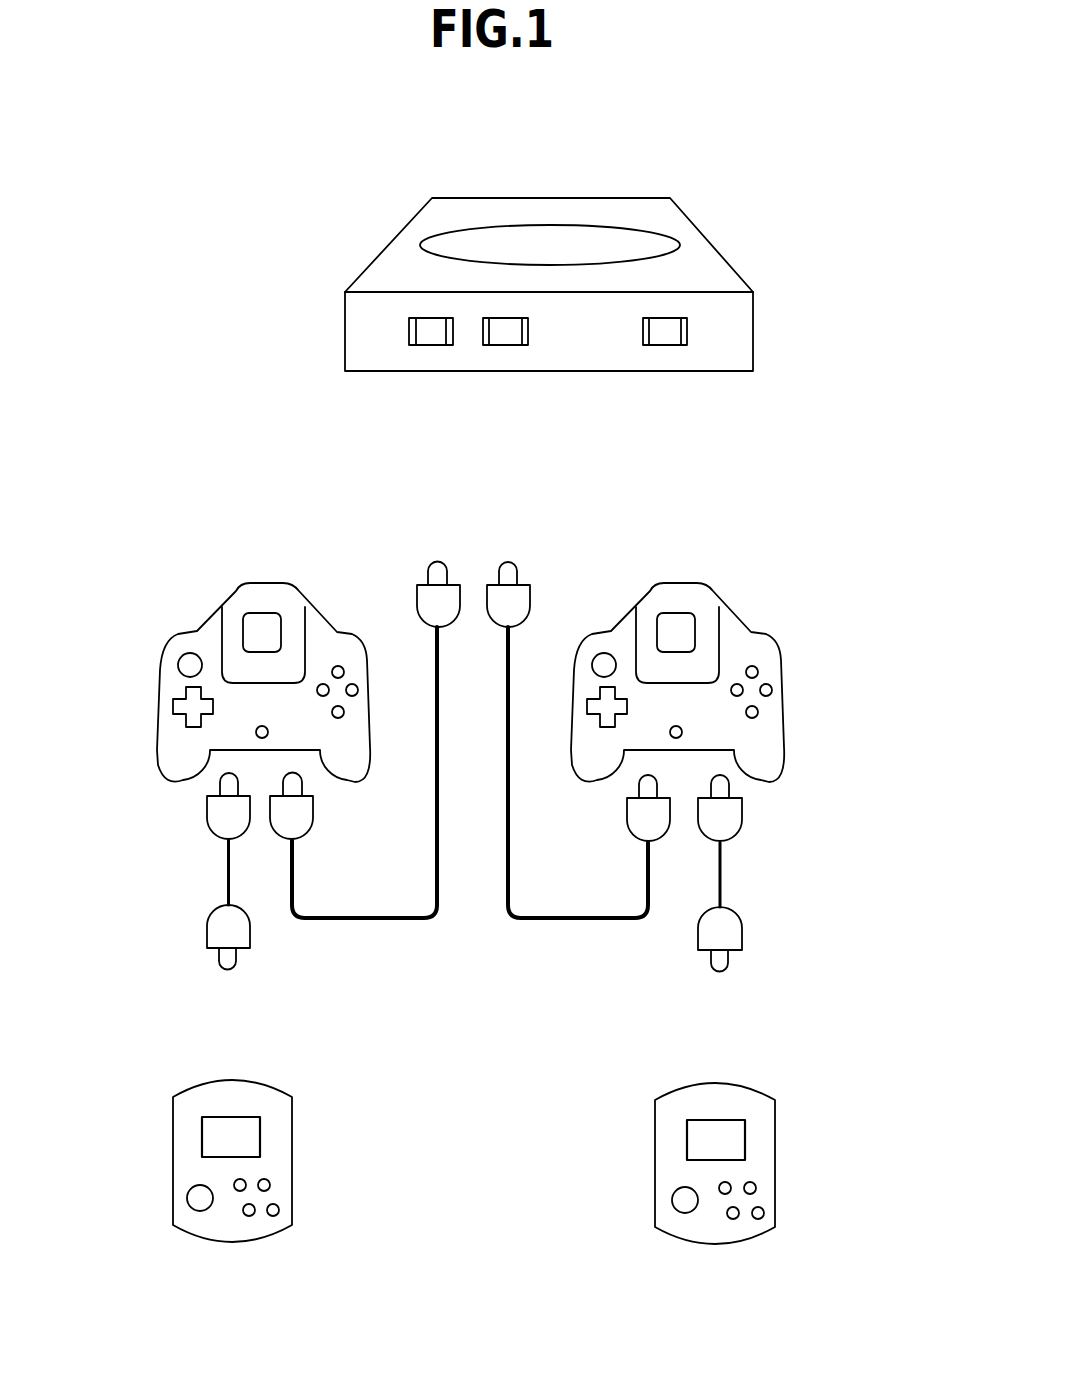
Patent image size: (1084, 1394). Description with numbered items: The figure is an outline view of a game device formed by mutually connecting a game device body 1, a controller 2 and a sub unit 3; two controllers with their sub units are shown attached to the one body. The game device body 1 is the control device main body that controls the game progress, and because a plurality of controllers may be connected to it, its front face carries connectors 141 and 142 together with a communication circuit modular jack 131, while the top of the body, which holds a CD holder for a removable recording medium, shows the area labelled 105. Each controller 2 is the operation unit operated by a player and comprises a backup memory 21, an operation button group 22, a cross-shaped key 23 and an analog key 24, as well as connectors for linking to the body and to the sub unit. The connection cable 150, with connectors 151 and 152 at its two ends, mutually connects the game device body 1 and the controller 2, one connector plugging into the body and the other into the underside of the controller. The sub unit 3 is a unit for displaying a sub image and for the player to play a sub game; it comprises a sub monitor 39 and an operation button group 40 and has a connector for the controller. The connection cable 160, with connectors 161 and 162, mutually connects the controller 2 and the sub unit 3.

The game device body 1 is at (581, 277).
The disk cover 105 is at (655, 243).
The connector 141 is at (427, 332).
The connector 142 is at (500, 333).
The communication circuit modular jack 131 is at (663, 335).
The controller 2 is at (460, 724).
The backup memory 21 is at (263, 592).
The operation button group 22 is at (375, 665).
The cross-shaped key 23 is at (190, 729).
The analog key 24 is at (173, 650).
The connection cable 150 is at (470, 751).
The connector 151 is at (422, 605).
The connector 152 is at (315, 818).
The connection cable 160 is at (476, 872).
The connector 161 is at (208, 820).
The connector 162 is at (208, 923).
The sub unit 3 is at (501, 1116).
The sub monitor 39 is at (203, 1133).
The operation button group 40 is at (162, 1172).